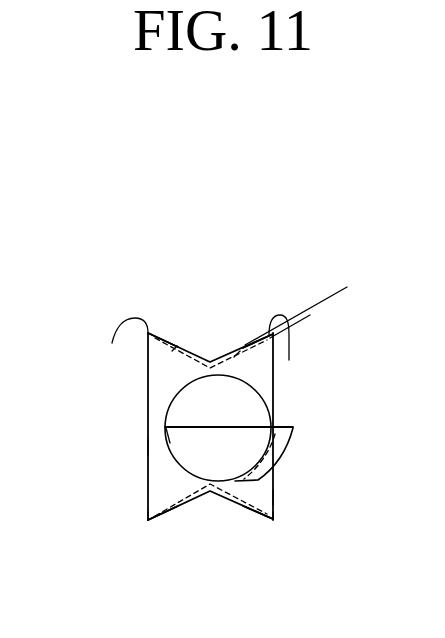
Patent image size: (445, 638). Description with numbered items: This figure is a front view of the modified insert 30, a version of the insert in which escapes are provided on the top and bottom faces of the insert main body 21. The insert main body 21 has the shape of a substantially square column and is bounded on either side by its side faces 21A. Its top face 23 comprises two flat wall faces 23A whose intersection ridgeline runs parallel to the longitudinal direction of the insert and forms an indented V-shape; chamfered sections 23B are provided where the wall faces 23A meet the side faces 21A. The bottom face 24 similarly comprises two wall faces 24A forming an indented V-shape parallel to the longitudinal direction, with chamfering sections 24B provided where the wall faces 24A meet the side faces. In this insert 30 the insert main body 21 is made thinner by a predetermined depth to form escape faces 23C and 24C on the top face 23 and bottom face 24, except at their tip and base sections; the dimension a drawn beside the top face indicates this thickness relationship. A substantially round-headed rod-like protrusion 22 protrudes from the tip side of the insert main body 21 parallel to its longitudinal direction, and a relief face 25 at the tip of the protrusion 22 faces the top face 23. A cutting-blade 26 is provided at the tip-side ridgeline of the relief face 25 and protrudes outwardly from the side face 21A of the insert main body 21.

The insert 30 is at (193, 192).
The insert main body 21 is at (137, 392).
The side face 21A is at (148, 447).
The protrusion 22 is at (150, 424).
The top face 23 is at (195, 343).
The wall face 23A is at (165, 340).
The chamfered section 23B is at (305, 378).
The escape face 23C is at (175, 348).
The bottom face 24 is at (216, 510).
The wall face 24A is at (169, 522).
The chamfering section 24B is at (150, 521).
The escape face 24C is at (191, 508).
The relief face 25 is at (251, 424).
The cutting-blade 26 is at (287, 426).
The wall thickness a is at (290, 292).